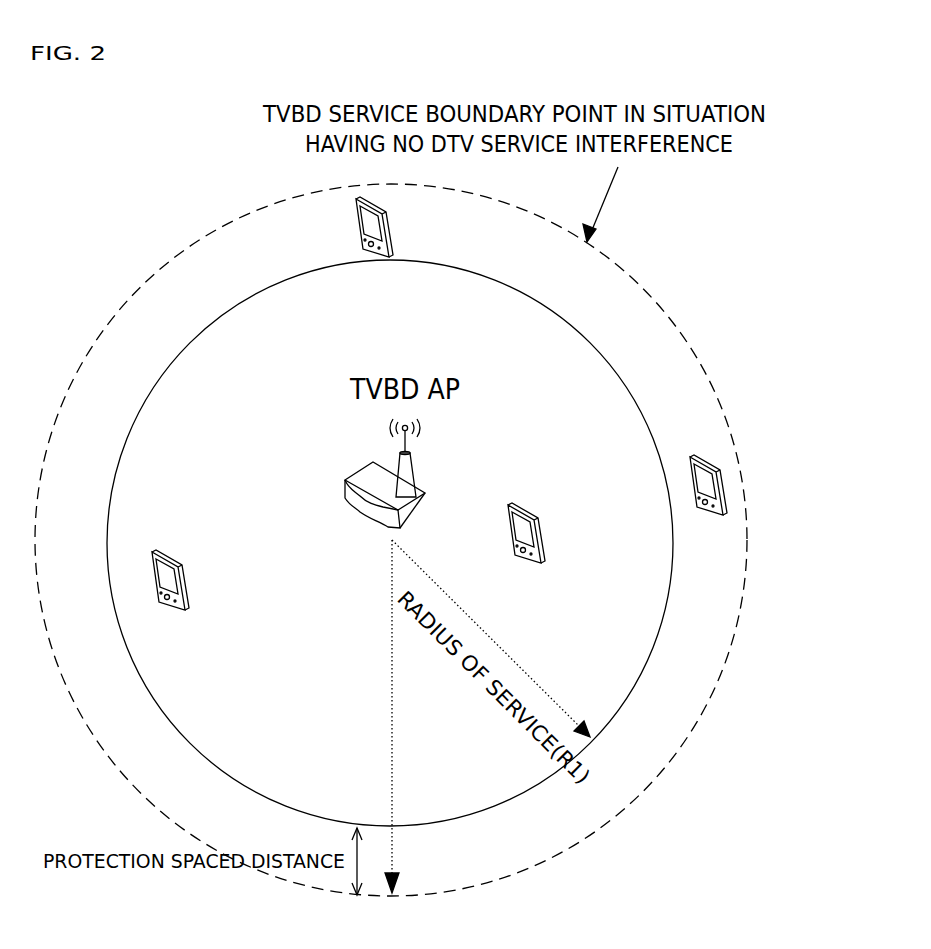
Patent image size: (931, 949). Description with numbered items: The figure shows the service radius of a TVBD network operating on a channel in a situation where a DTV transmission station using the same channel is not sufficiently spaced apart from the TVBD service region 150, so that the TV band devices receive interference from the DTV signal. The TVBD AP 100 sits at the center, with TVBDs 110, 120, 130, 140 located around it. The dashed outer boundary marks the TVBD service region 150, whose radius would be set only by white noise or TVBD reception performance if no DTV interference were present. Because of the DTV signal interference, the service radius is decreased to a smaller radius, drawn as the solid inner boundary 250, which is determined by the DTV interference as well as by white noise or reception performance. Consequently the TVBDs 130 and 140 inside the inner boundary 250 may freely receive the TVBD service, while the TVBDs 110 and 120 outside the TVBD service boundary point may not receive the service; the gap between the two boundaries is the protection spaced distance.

The TVBD AP 100 is at (367, 481).
The TVBD 110 is at (698, 462).
The TVBD 120 is at (388, 230).
The TVBD 130 is at (530, 508).
The TVBD 140 is at (172, 552).
The TVBD service region 150 is at (685, 338).
The service boundary of radius R1 250 is at (580, 331).